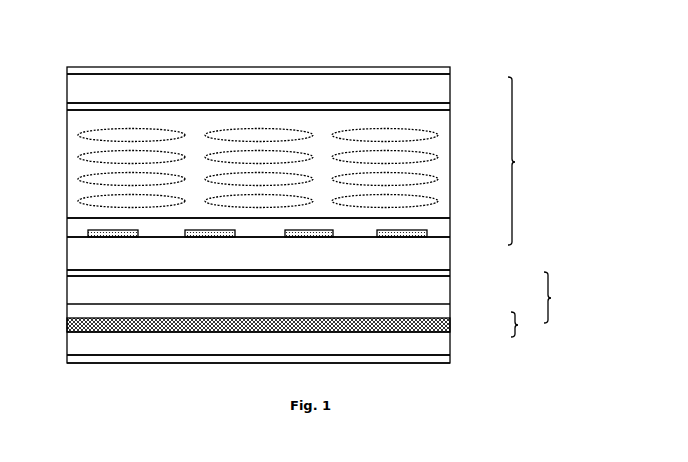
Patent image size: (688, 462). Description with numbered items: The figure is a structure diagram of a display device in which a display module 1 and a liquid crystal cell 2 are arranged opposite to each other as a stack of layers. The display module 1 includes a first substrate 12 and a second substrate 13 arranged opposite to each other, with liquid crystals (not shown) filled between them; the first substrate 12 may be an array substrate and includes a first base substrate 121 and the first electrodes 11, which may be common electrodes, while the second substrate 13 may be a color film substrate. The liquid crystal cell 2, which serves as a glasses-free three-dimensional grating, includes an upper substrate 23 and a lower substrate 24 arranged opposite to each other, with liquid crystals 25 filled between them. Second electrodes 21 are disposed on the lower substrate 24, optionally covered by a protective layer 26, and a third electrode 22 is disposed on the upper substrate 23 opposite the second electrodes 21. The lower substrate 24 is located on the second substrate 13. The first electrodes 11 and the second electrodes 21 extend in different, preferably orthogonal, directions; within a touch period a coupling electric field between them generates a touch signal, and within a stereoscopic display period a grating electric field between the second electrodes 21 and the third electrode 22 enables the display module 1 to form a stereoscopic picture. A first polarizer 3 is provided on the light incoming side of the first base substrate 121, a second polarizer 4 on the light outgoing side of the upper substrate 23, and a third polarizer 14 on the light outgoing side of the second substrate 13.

The display module 1 is at (555, 297).
The liquid crystal cell 2 is at (518, 161).
The first polarizer 3 is at (440, 363).
The second polarizer 4 is at (447, 68).
The first electrodes 11 is at (450, 325).
The first substrate 12 is at (526, 324).
The first base substrate 121 is at (440, 345).
The second substrate 13 is at (422, 293).
The third polarizer 14 is at (443, 272).
The second electrodes 21 is at (432, 233).
The third electrode 22 is at (427, 108).
The upper substrate 23 is at (425, 90).
The lower substrate 24 is at (420, 262).
The liquid crystals 25 is at (427, 182).
The protective layer 26 is at (397, 223).